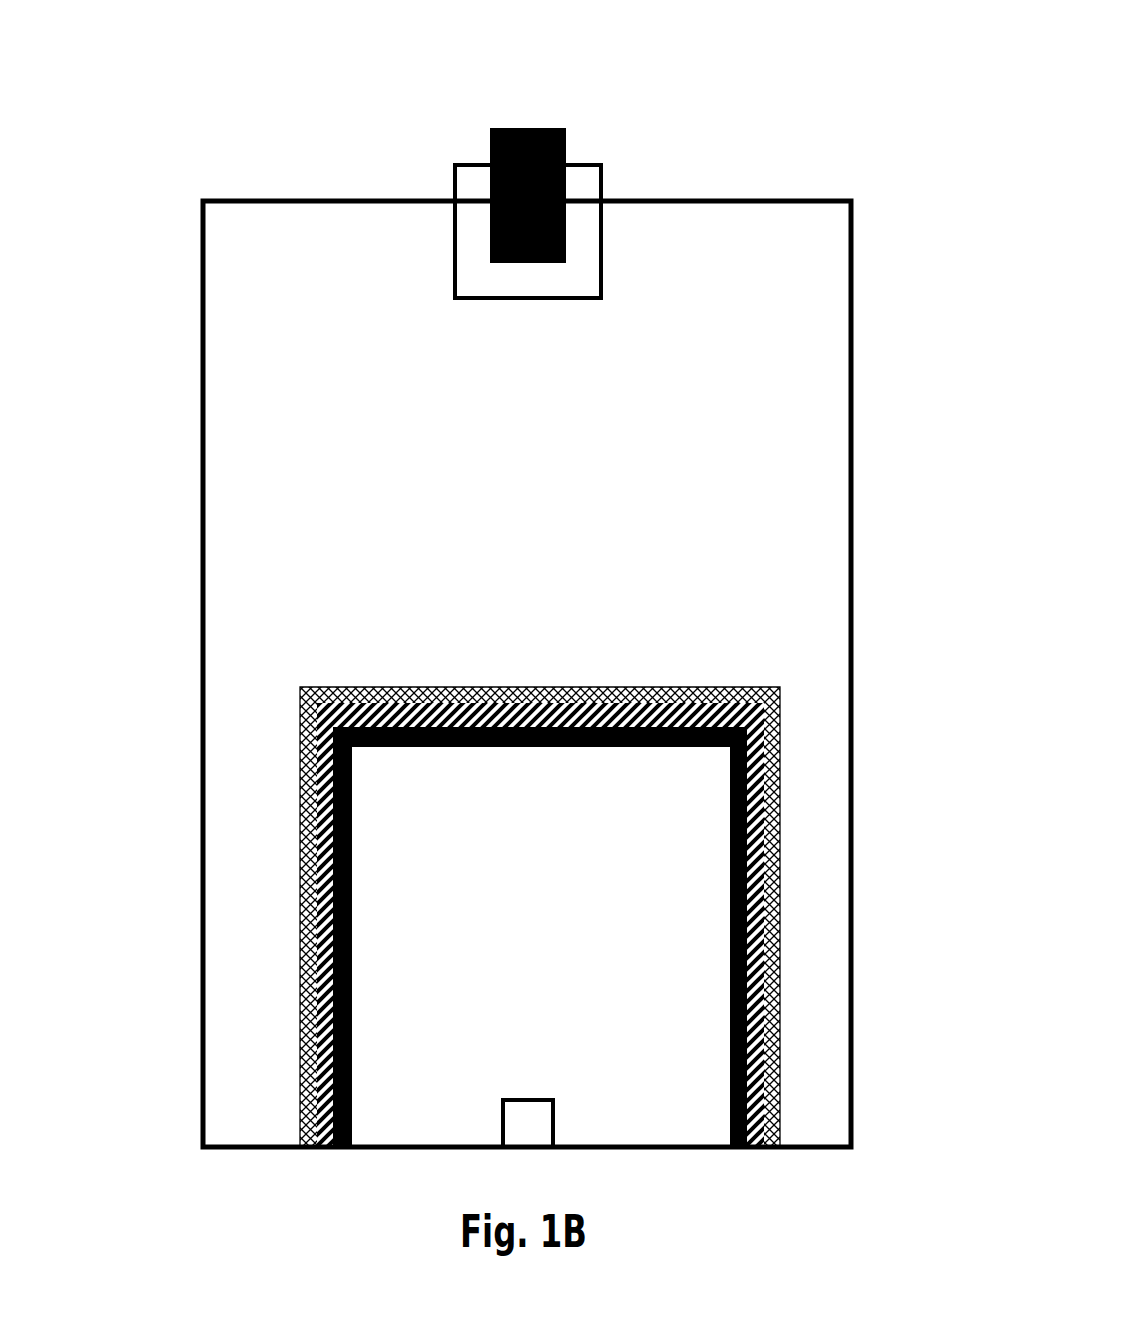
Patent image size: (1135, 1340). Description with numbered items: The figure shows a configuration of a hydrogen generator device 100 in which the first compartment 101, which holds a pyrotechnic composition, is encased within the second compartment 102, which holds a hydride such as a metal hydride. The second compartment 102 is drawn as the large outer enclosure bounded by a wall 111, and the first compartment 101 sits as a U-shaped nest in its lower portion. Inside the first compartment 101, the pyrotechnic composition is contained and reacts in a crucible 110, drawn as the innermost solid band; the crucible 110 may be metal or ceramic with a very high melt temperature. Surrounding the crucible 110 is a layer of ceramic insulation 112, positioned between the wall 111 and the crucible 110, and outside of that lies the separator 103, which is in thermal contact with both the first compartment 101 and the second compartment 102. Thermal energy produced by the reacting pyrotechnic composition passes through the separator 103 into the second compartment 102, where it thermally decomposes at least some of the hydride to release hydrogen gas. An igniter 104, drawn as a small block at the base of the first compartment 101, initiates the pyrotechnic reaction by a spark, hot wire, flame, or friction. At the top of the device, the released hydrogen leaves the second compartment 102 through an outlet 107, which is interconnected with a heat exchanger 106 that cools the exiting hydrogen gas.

The hydrogen generator device 100 is at (588, 70).
The first compartment 101 is at (565, 993).
The second compartment 102 is at (635, 453).
The separator 103 is at (308, 943).
The igniter 104 is at (553, 1135).
The heat exchanger 106 is at (602, 190).
The outlet 107 is at (490, 142).
The crucible 110 is at (337, 788).
The wall 111 is at (202, 775).
The layer of ceramic insulation 112 is at (323, 993).